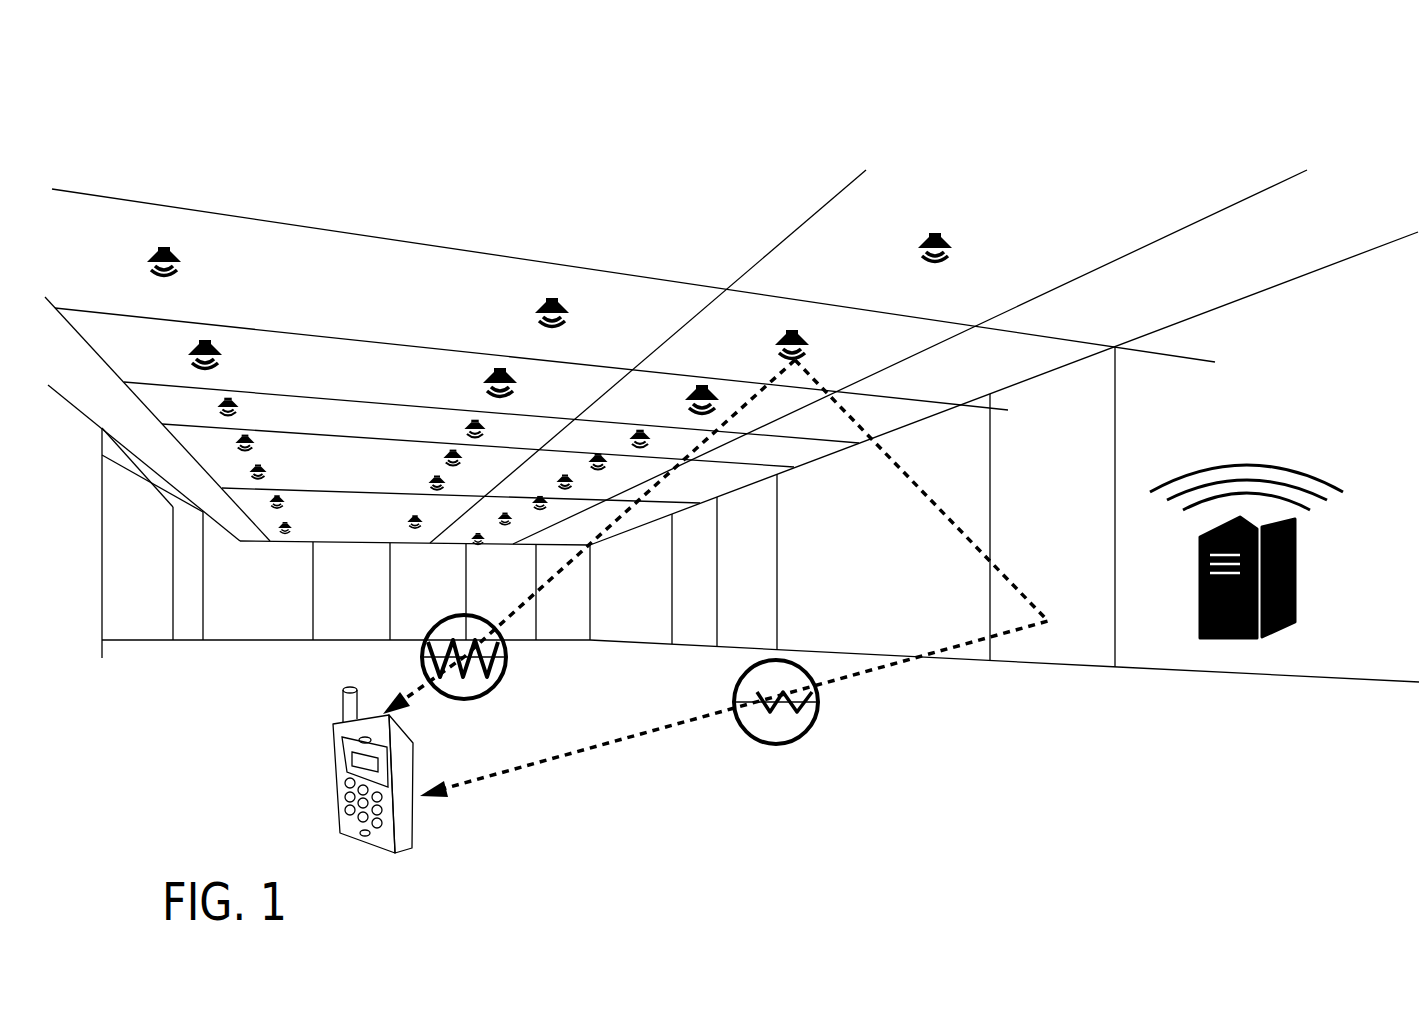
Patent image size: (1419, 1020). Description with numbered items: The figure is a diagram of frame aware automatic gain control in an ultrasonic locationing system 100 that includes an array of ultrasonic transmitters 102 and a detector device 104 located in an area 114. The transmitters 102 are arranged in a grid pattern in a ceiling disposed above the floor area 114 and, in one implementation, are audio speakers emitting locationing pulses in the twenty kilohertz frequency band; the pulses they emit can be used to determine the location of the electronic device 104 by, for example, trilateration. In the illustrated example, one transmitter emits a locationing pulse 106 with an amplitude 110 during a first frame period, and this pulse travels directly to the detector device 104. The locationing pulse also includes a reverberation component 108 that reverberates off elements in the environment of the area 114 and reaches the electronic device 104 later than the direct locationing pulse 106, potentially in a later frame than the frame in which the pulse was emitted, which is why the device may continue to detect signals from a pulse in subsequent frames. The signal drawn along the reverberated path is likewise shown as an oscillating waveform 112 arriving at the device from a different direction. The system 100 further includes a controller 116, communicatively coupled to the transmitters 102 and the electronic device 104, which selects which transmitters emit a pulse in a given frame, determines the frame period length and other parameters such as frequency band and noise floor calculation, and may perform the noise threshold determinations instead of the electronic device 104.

The ultrasonic locationing system 100 is at (1263, 53).
The ultrasonic transmitters 102 is at (177, 270).
The detector device 104 is at (330, 797).
The locationing pulse 106 is at (562, 570).
The reverberation component 108 is at (925, 500).
The amplitude 110 is at (505, 652).
The second signal 112 is at (812, 727).
The area 114 is at (158, 684).
The controller 116 is at (1297, 557).